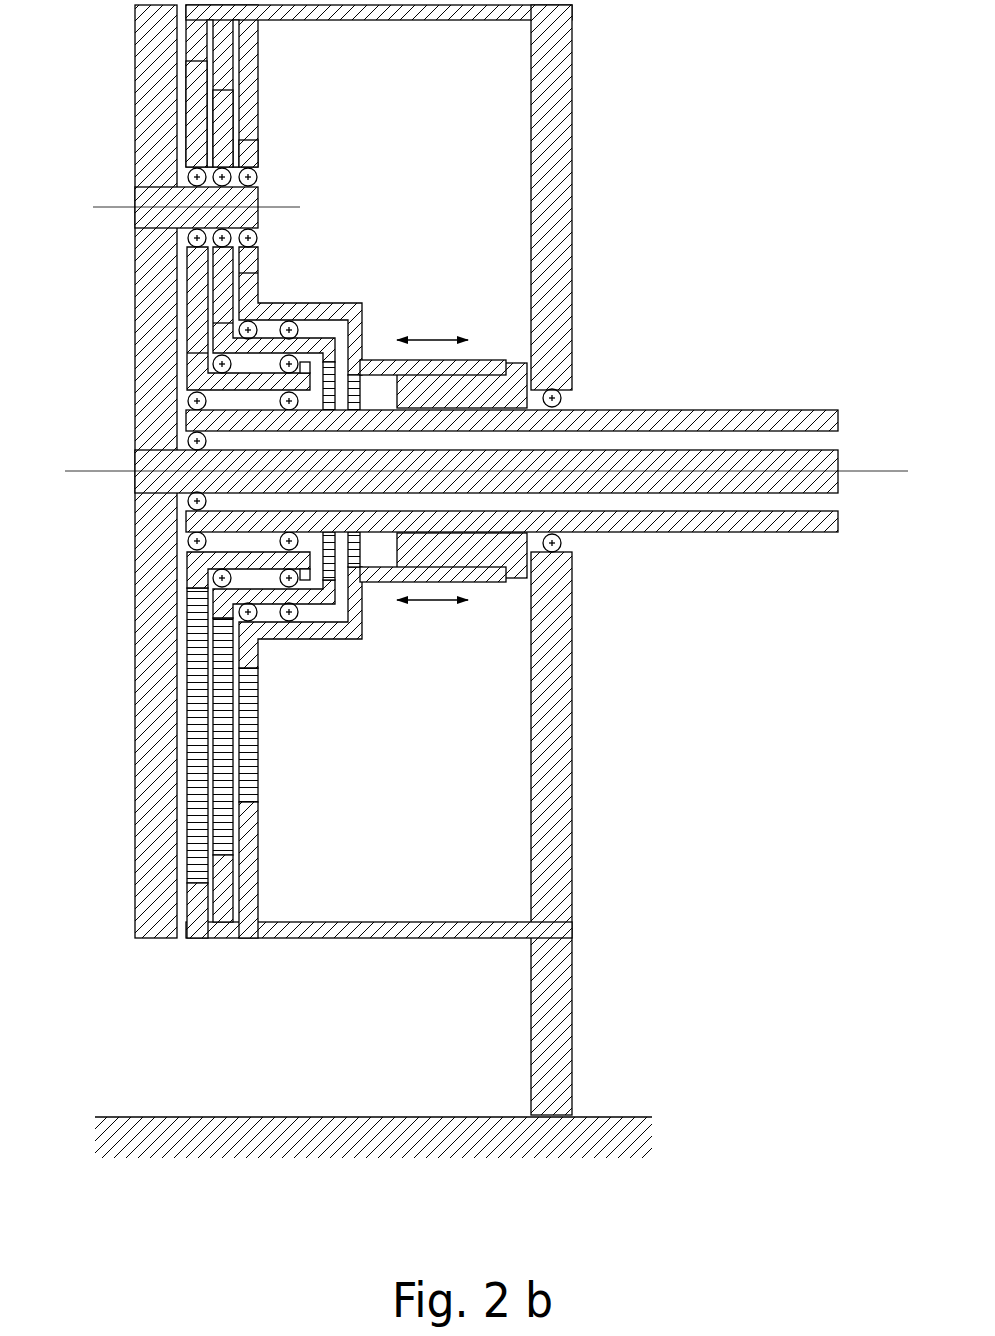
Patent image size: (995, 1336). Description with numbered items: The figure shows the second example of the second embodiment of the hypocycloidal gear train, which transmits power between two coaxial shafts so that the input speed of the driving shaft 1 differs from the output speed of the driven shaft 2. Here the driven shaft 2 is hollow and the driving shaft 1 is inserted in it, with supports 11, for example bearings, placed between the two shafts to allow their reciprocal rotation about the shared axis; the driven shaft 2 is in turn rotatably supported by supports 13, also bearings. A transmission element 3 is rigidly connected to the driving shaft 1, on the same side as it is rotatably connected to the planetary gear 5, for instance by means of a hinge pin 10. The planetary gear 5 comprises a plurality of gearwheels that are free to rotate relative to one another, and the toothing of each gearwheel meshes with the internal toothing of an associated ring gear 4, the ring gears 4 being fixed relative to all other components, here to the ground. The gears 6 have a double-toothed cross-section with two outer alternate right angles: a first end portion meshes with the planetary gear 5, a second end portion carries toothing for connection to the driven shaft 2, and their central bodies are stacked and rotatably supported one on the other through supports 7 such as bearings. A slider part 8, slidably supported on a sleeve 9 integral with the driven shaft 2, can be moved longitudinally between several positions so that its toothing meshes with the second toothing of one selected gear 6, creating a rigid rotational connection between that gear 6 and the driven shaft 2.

The driving shaft 1 is at (731, 462).
The driven shaft 2 is at (698, 408).
The transmission element 3 is at (134, 791).
The ring gear 4 is at (270, 78).
The planetary gear 5 is at (270, 152).
The gear 6 is at (272, 302).
The support 7 is at (297, 322).
The slider part 8 is at (492, 357).
The sleeve 9 is at (508, 382).
The hinge pin 10 is at (270, 198).
The support 11 is at (187, 441).
The support 13 is at (560, 395).